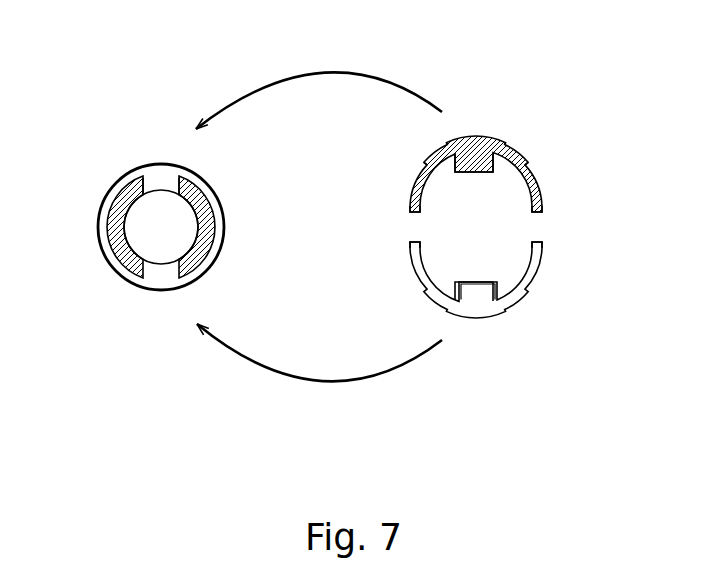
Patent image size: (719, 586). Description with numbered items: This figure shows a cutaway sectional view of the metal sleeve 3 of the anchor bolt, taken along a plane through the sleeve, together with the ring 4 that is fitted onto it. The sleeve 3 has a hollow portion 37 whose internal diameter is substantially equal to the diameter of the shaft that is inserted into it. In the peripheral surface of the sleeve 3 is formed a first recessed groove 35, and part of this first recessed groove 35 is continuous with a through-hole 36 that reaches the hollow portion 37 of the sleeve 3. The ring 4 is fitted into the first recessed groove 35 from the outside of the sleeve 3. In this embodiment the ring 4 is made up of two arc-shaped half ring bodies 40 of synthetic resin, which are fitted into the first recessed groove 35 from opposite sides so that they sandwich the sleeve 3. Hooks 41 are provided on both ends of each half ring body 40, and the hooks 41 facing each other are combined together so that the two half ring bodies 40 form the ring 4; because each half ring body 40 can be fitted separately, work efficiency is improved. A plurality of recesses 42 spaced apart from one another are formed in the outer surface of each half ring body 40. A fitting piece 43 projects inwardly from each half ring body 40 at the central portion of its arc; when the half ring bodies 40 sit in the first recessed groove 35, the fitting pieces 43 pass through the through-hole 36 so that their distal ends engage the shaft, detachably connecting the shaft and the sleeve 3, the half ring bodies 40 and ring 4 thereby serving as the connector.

The sleeve 3 is at (107, 197).
The first recessed groove 35 is at (122, 203).
The through-hole 36 is at (146, 183).
The hollow portion 37 is at (185, 250).
The ring 4 is at (510, 219).
The half ring body 40 is at (543, 188).
The hook 41 is at (408, 204).
The recess 42 is at (446, 140).
The fitting piece 43 is at (472, 174).